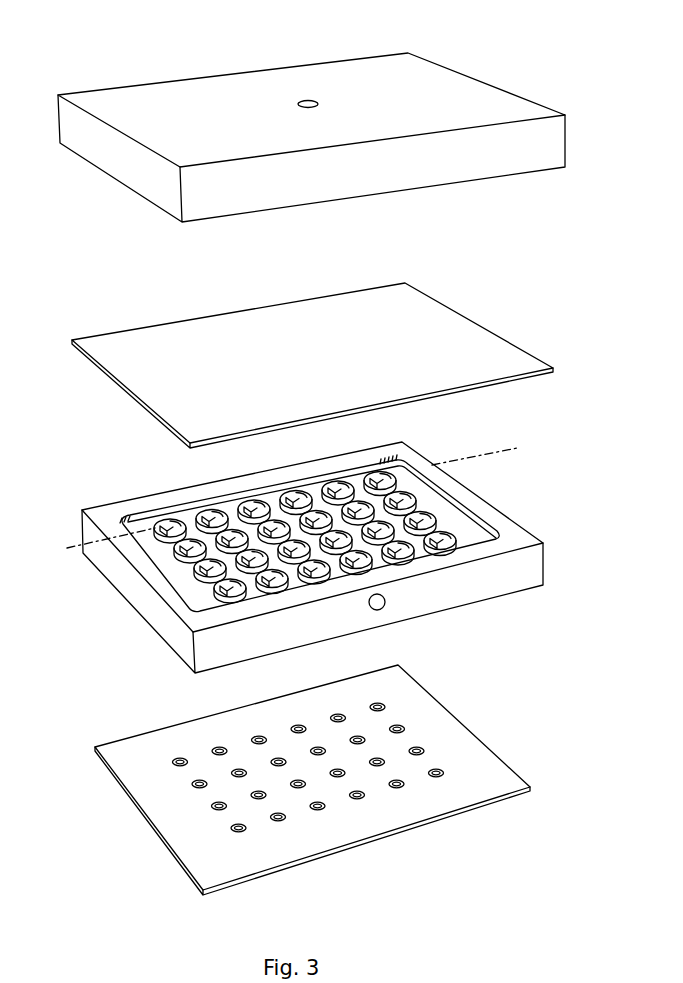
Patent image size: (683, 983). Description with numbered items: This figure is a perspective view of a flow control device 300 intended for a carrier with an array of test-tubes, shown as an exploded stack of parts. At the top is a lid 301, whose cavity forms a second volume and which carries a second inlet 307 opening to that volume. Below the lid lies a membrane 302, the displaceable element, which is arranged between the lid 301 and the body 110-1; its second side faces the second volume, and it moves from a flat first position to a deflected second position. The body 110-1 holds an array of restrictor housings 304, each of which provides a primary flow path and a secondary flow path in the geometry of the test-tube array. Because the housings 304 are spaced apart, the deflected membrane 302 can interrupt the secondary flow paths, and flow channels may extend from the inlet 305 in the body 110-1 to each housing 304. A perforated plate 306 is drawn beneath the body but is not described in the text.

The flow control device 300 is at (66, 54).
The lid 301 is at (311, 126).
The membrane 302 is at (107, 380).
The housing 304 is at (160, 511).
The inlet 305 is at (385, 603).
The bottom plate with holes 306 is at (95, 752).
The second inlet 307 is at (308, 100).
The body 110-1 is at (297, 557).